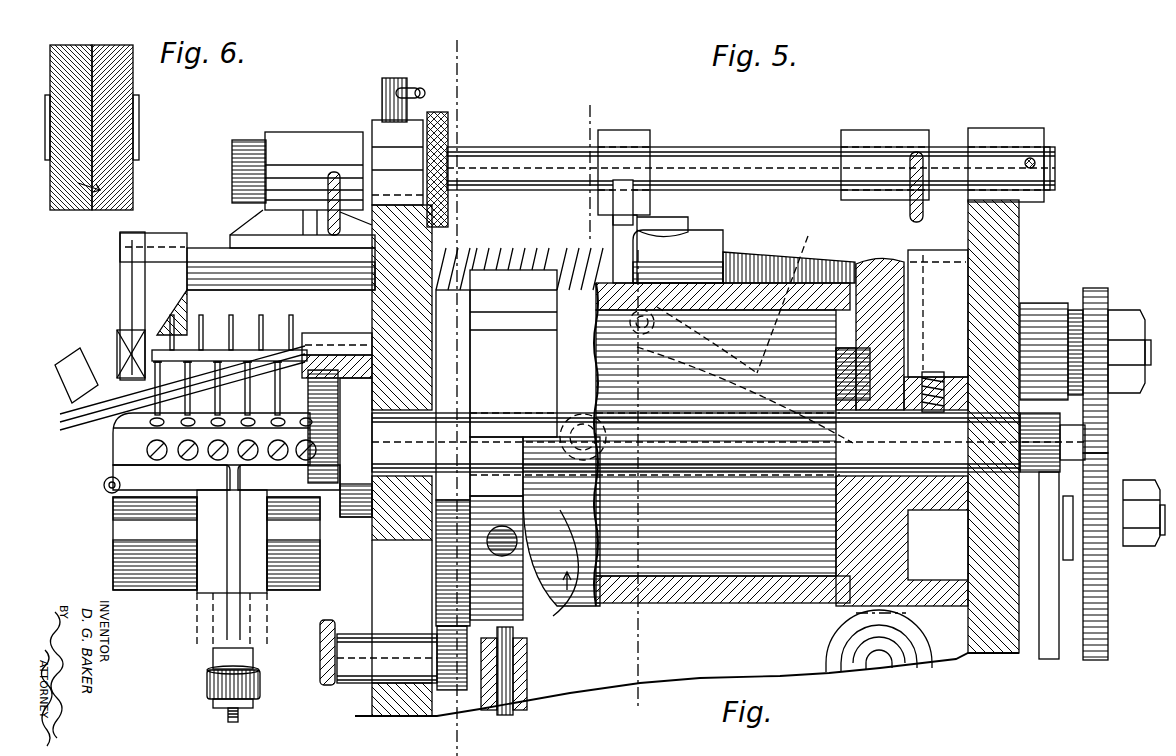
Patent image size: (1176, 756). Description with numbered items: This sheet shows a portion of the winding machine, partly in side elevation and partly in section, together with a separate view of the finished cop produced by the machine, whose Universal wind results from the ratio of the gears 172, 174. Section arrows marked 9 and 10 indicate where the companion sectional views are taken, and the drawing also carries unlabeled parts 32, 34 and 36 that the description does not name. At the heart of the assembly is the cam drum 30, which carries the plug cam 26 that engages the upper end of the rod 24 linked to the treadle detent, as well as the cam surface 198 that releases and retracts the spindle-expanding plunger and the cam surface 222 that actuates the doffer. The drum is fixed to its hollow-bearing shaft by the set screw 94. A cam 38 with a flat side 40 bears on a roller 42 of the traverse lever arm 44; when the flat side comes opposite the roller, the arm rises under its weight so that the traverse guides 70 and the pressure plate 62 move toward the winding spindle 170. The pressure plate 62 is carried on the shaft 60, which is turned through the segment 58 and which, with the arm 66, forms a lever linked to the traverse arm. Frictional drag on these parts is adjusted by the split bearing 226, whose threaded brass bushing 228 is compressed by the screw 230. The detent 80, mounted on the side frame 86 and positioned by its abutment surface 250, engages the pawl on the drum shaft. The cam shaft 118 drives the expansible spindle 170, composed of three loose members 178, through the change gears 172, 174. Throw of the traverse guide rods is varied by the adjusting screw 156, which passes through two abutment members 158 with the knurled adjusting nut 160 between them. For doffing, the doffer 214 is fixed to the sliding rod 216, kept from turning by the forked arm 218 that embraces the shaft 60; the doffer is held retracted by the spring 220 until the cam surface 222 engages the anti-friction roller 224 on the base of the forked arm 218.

The section line 9- 9 is at (457, 48).
The belt tightener 10 is at (603, 114).
The rod 24 is at (513, 634).
The plug cam 26 is at (500, 525).
The cam drum 30 is at (628, 612).
The bore 32 is at (871, 665).
The boss 34 is at (838, 656).
The frame 36 is at (877, 262).
The cam 38 is at (447, 646).
The flat side 40 is at (460, 350).
The roller 42 is at (448, 684).
The traverse lever arm 44 is at (320, 668).
The segment 58 is at (907, 219).
The shaft 60 is at (232, 172).
The pressure plate 62 is at (229, 325).
The arm 66 is at (328, 153).
The traverse guides 70 is at (247, 390).
The detent 80 is at (337, 332).
The side frame 86 is at (377, 218).
The set screw 94 is at (929, 374).
The cam shaft 118 is at (1158, 550).
The adjusting screw 156 is at (228, 713).
The abutment members 158 is at (213, 665).
The knurled adjusting nut 160 is at (207, 687).
The winding spindle 170 is at (247, 347).
The gear 172 is at (1096, 291).
The gear 174 is at (1093, 473).
The loose members 178 is at (292, 350).
The cam surface 198 is at (562, 392).
The doffer 214 is at (147, 353).
The sliding rod 216 is at (773, 240).
The forked arm 218 is at (627, 133).
The spring 220 is at (539, 248).
The cam surface 222 is at (810, 273).
The anti-friction roller 224 is at (653, 372).
The split bearing 226 is at (397, 162).
The brass bushing 228 is at (448, 128).
The screw 230 is at (400, 76).
The abutment surface 250 is at (380, 372).